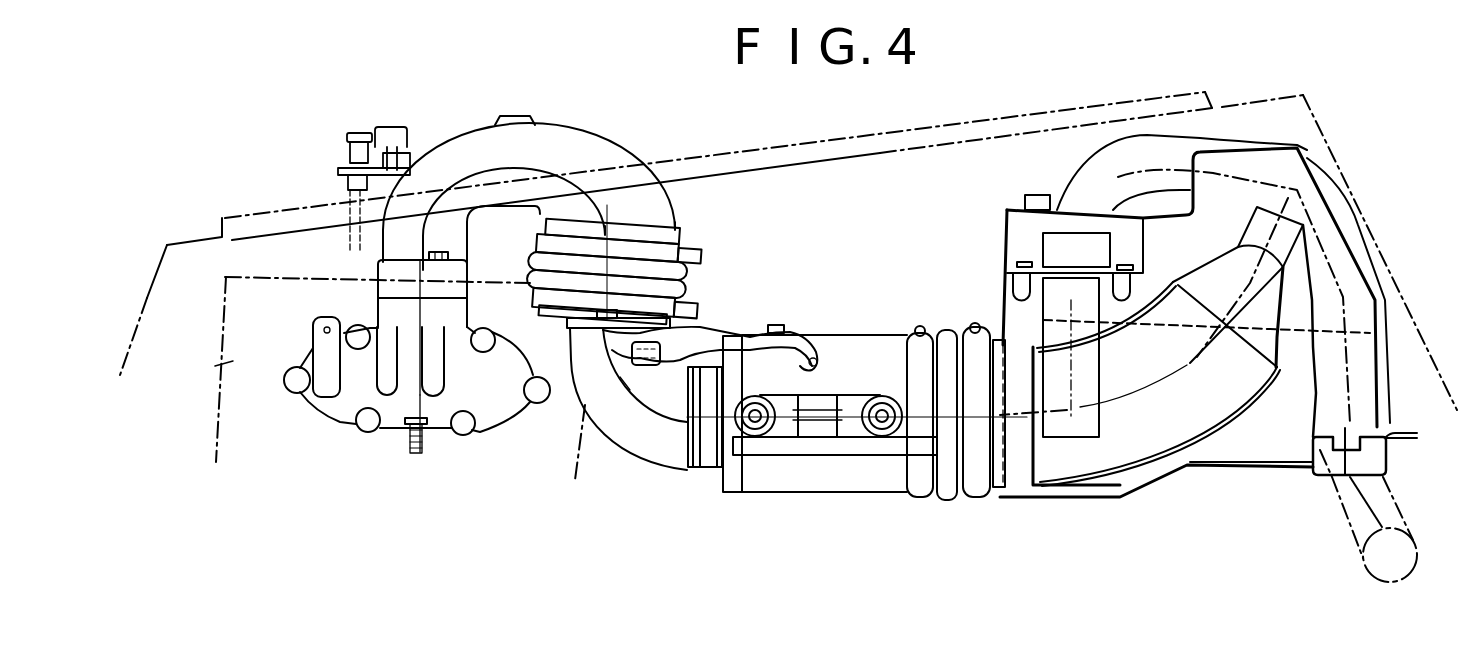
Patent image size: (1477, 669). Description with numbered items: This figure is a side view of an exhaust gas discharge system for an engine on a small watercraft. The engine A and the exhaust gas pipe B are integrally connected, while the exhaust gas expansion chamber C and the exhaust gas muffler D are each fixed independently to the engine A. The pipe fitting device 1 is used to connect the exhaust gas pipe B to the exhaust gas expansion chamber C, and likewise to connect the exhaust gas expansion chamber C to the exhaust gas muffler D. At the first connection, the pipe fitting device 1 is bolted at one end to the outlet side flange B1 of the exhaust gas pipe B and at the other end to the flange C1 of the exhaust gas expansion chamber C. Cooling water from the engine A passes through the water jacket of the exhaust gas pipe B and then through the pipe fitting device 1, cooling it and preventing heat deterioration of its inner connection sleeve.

The engine A is at (205, 383).
The exhaust gas pipe B is at (540, 135).
The outlet side flange B1 is at (670, 212).
The exhaust gas expansion chamber C is at (848, 345).
The flange C1 is at (695, 318).
The exhaust gas muffler D is at (1257, 437).
The pipe fitting device 1 is at (677, 243).